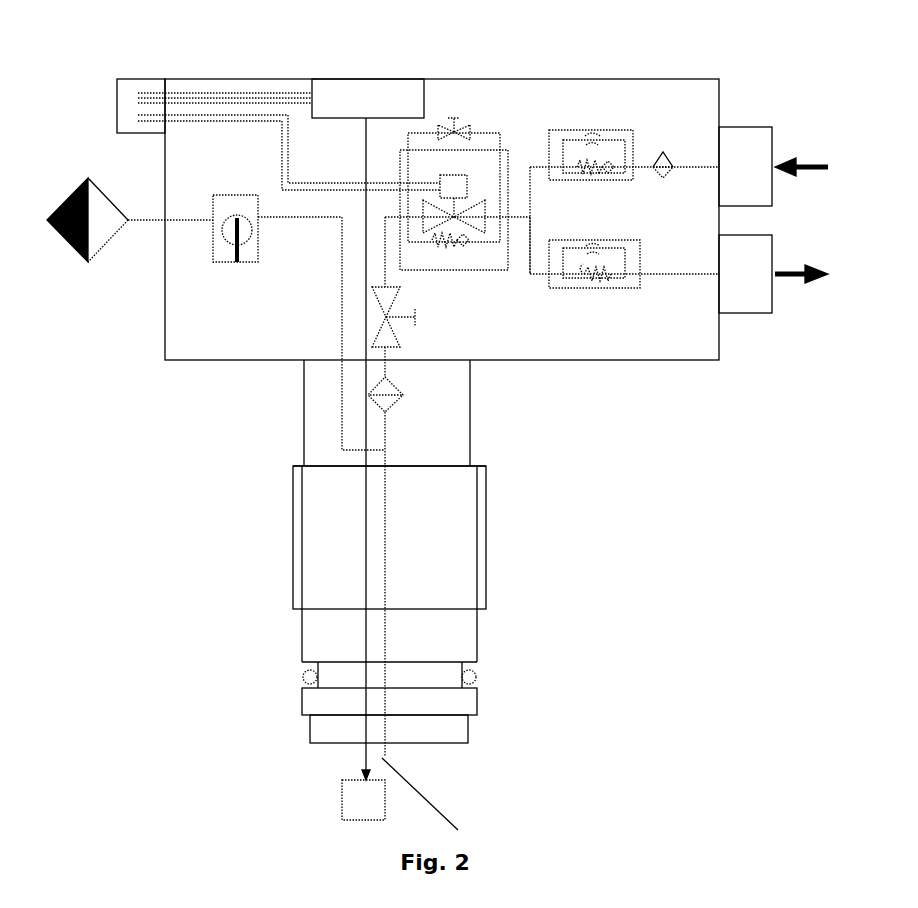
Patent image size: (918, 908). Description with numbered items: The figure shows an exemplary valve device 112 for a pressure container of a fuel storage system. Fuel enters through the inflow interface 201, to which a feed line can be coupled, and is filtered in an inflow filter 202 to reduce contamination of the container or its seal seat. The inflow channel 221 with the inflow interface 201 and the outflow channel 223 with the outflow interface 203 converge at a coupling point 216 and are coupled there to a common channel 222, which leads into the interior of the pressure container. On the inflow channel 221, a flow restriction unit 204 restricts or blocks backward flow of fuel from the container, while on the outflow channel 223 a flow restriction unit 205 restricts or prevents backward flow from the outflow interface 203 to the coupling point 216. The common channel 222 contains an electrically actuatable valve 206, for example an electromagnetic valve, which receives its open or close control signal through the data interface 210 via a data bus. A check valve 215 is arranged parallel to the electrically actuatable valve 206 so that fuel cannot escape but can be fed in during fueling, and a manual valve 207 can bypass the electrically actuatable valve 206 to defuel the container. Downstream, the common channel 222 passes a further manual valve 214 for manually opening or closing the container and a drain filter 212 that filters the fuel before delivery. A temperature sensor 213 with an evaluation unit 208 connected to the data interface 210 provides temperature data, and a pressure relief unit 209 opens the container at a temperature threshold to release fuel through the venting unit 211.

The valve device 112 is at (582, 483).
The inflow interface 201 is at (742, 127).
The inflow filter 202 is at (663, 152).
The outflow interface 203 is at (735, 313).
The flow restriction unit 204 is at (568, 130).
The flow restriction unit 205 is at (600, 290).
The electrically actuatable valve 206 is at (427, 196).
The manual valve 207 is at (464, 126).
The evaluation unit 208 is at (322, 118).
The pressure relief unit 209 is at (258, 240).
The data interface 210 is at (118, 118).
The venting unit 211 is at (93, 262).
The drain filter 212 is at (408, 400).
The temperature sensor 213 is at (345, 792).
The further manual valve 214 is at (418, 322).
The check valve 215 is at (453, 262).
The coupling point 216 is at (530, 217).
The inflow channel 221 is at (701, 170).
The common channel 222 is at (521, 220).
The outflow channel 223 is at (663, 273).